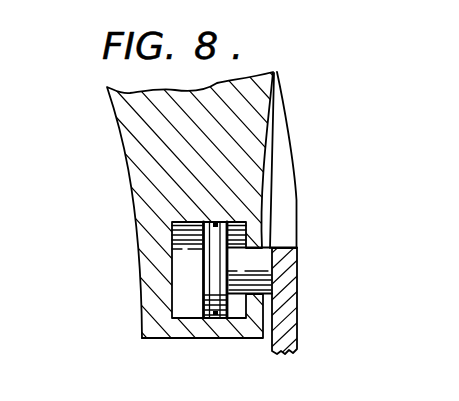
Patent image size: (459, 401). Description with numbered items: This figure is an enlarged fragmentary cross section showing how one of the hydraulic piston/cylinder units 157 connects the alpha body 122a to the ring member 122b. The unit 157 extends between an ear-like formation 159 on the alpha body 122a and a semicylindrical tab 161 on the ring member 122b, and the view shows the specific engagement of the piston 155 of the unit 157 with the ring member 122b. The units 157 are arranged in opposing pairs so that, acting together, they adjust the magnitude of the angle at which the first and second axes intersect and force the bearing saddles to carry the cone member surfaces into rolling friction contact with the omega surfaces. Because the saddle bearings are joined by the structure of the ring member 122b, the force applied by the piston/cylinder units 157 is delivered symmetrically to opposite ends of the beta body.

The alpha body 122a is at (133, 159).
The ring member 122b is at (283, 147).
The piston 155 is at (244, 258).
The hydraulic piston/cylinder unit 157 is at (180, 286).
The ear-like formation 159 is at (140, 322).
The semicylindrical tab 161 is at (295, 273).